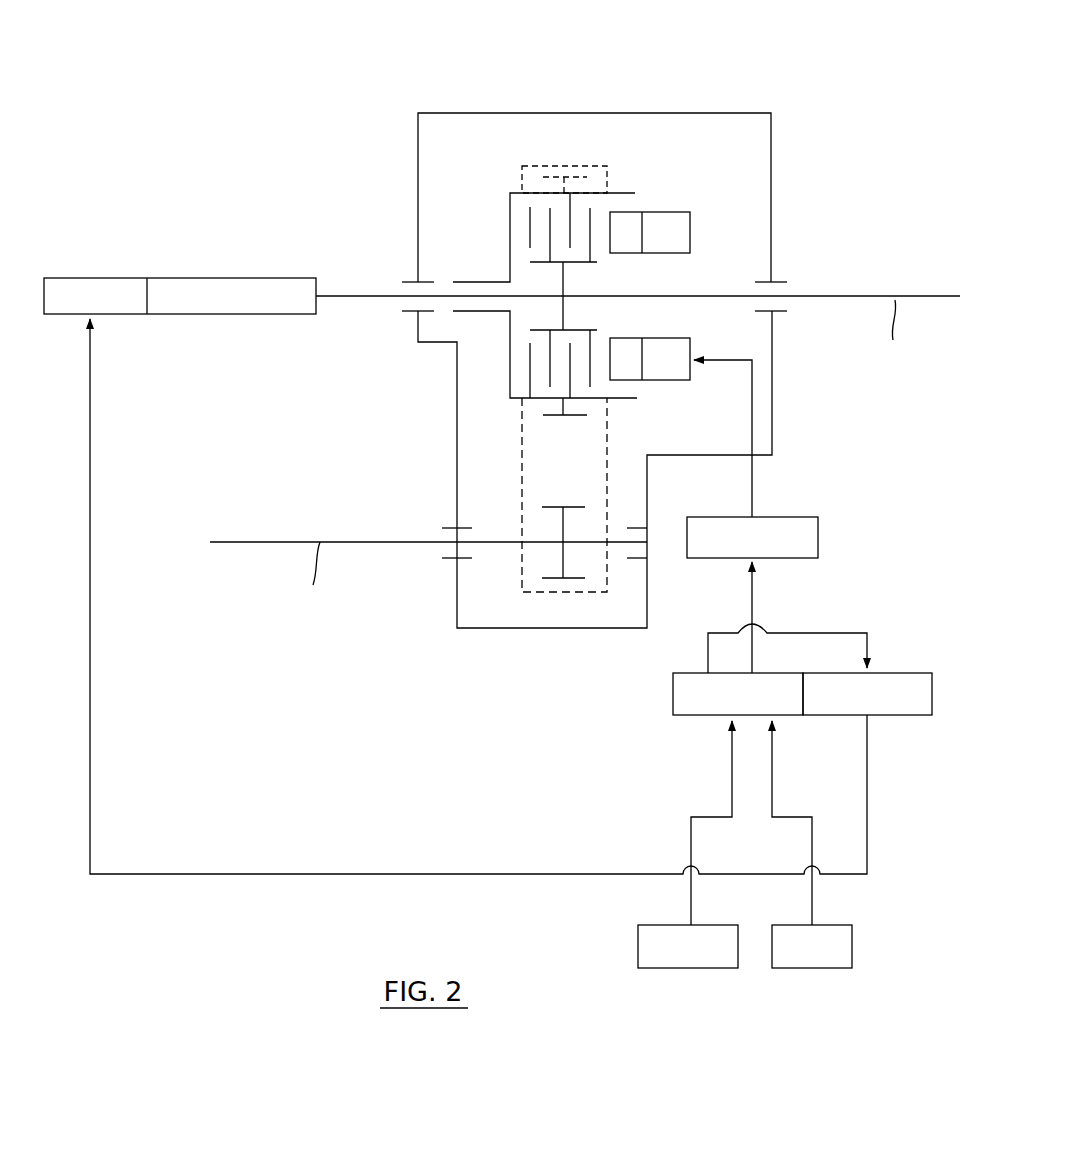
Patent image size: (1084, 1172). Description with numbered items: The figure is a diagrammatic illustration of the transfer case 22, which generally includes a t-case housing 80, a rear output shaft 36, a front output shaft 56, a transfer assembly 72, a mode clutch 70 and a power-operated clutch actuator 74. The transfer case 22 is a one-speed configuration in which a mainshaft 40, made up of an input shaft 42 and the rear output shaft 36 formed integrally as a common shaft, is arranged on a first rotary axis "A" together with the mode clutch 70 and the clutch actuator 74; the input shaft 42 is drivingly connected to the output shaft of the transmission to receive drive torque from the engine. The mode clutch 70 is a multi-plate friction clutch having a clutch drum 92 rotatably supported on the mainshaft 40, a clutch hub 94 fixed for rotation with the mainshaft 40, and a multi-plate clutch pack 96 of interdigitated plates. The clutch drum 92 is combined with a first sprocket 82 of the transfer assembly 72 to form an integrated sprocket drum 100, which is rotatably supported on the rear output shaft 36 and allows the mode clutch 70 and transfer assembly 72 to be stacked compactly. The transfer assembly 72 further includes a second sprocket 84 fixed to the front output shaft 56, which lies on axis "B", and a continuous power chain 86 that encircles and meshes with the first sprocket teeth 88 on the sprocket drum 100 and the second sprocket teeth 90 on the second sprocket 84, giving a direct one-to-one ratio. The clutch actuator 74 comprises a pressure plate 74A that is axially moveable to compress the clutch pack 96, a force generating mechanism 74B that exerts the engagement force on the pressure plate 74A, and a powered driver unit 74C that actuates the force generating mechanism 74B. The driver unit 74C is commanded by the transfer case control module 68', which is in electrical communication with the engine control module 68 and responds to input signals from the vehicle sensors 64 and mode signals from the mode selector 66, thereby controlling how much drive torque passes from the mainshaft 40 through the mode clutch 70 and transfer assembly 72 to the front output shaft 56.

The transfer case 22 is at (764, 108).
The rear output shaft 36 is at (866, 296).
The mainshaft 40 is at (720, 292).
The input shaft 42 is at (350, 295).
The front output shaft 56 is at (263, 542).
The vehicle sensors 64 is at (689, 968).
The mode selector 66 is at (812, 968).
The engine control module 68 is at (511, 596).
The transfer case control module 68' is at (761, 638).
The mode clutch 70 is at (672, 233).
The transfer assembly 72 is at (510, 438).
The power-operated clutch actuator 74 is at (736, 279).
The pressure plate 74A is at (620, 253).
The force generating mechanism 74B is at (694, 345).
The powered driver unit 74C is at (818, 536).
The t-case housing 80 is at (443, 112).
The first sprocket 82 is at (565, 405).
The second sprocket 84 is at (563, 560).
The power chain 86 is at (543, 593).
The first sprocket teeth 88 is at (553, 418).
The second sprocket teeth 90 is at (575, 578).
The clutch drum 92 is at (514, 400).
The clutch hub 94 is at (544, 264).
The clutch pack 96 is at (538, 222).
The sprocket drum 100 is at (540, 186).